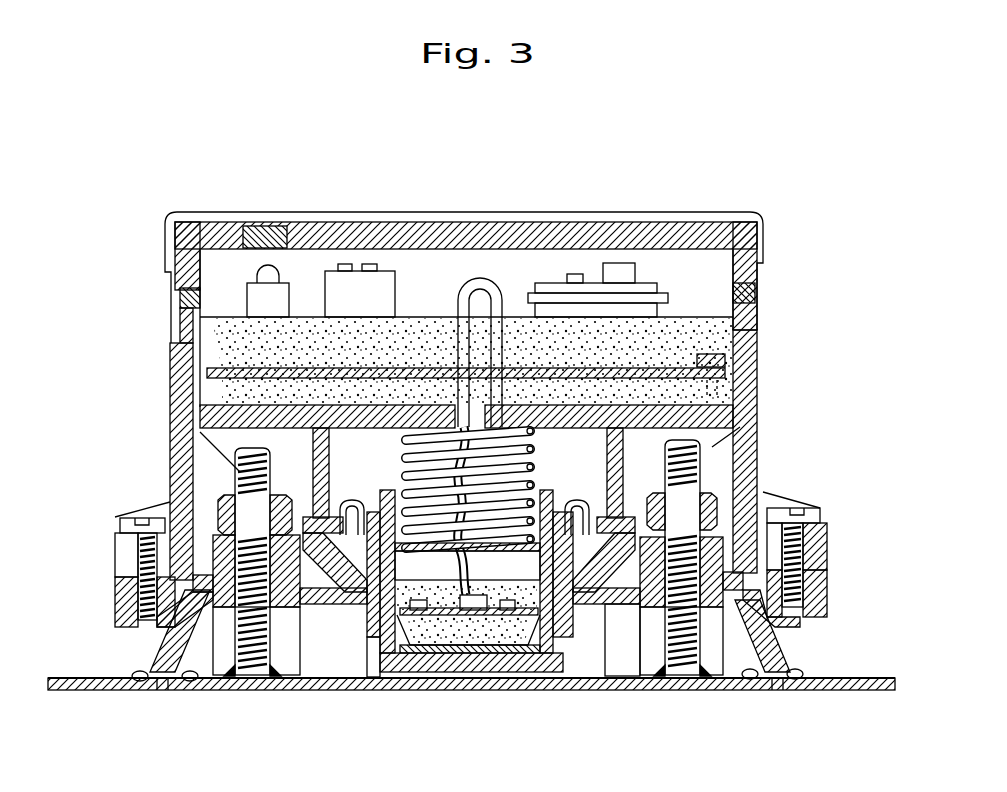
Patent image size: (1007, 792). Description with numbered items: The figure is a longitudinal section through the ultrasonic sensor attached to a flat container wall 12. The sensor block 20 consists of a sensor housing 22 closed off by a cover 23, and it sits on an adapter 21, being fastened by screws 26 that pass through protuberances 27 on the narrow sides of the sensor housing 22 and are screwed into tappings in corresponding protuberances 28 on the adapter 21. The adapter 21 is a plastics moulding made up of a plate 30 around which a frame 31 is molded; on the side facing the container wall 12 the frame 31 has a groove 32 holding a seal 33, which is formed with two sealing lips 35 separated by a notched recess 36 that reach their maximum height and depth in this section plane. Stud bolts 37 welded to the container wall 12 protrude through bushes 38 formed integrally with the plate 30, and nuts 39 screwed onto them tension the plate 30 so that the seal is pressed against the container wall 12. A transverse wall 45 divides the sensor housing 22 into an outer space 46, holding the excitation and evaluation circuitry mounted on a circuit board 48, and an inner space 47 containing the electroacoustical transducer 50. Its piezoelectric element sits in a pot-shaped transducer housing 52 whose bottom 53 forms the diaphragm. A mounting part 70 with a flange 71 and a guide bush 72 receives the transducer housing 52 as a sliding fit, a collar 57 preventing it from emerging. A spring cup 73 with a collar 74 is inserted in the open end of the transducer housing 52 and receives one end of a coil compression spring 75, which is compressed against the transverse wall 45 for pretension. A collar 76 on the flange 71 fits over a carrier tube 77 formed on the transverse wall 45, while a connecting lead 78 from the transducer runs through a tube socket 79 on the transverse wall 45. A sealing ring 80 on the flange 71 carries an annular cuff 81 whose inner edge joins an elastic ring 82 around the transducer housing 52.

The container wall 12 is at (72, 692).
The sensor block 20 is at (148, 215).
The adapter 21 is at (110, 608).
The sensor housing 22 is at (172, 350).
The cover 23 is at (593, 226).
The screws 26 is at (118, 521).
The protuberances 27 is at (115, 548).
The protuberances 28 is at (115, 580).
The plate 30 is at (325, 605).
The frame 31 is at (160, 630).
The groove 32 is at (213, 642).
The seal 33 is at (150, 655).
The sealing lips 35 is at (133, 681).
The notched recess 36 is at (168, 672).
The stud bolts 37 is at (210, 440).
The bushes 38 is at (195, 528).
The nuts 39 is at (200, 480).
The transverse wall 45 is at (305, 408).
The outer space 46 is at (188, 362).
The inner space 47 is at (205, 398).
The circuit board 48 is at (708, 372).
The electroacoustical transducer 50 is at (370, 662).
The transducer housing 52 is at (557, 755).
The bottom 53 is at (437, 670).
The collar 57 is at (348, 505).
The mounting part 70 is at (620, 645).
The flange 71 is at (625, 592).
The guide bush 72 is at (583, 602).
The spring cup 73 is at (490, 645).
The collar 74 is at (548, 500).
The coil compression spring 75 is at (402, 368).
The collar 76 is at (286, 517).
The carrier tube 77 is at (715, 410).
The connecting lead 78 is at (495, 278).
The tube socket 79 is at (456, 330).
The sealing ring 80 is at (616, 473).
The annular cuff 81 is at (565, 455).
The elastic ring 82 is at (562, 503).